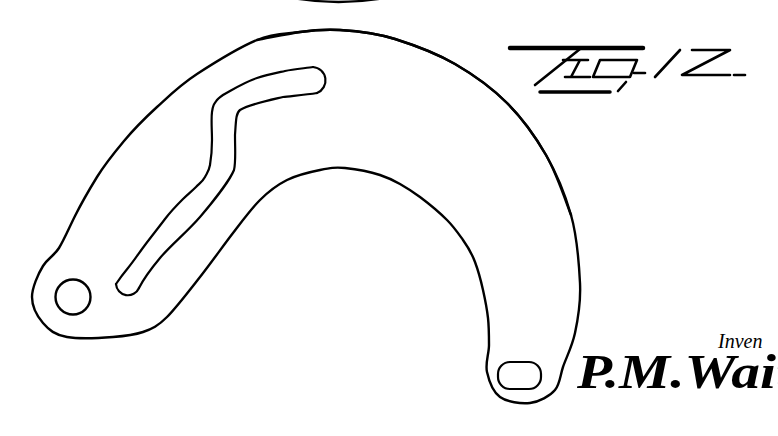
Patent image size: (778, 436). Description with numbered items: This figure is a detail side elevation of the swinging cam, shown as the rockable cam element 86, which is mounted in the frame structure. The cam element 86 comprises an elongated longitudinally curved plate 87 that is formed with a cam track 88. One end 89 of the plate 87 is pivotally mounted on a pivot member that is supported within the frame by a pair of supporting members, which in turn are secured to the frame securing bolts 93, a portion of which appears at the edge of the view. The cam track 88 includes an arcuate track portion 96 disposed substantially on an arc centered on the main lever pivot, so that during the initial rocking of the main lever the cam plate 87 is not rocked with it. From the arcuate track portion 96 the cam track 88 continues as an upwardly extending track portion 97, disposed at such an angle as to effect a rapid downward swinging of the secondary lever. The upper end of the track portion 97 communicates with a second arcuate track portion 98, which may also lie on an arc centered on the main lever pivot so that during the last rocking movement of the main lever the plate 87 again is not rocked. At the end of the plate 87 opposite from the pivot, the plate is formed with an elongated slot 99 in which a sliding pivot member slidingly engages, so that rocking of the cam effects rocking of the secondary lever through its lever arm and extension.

The rockable cam element 86 is at (570, 212).
The elongated longitudinally curved plate 87 is at (442, 65).
The cam track 88 is at (232, 156).
The one end of the plate 89 is at (55, 277).
The frame securing bolts 93 is at (176, 9).
The arcuate track portion 96 is at (151, 234).
The upwardly extending track portion 97 is at (212, 135).
The second arcuate track portion 98 is at (277, 72).
The elongated slot 99 is at (523, 360).